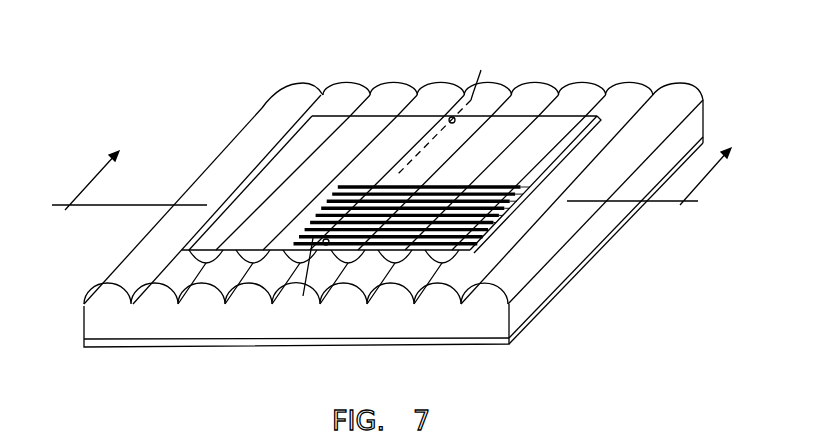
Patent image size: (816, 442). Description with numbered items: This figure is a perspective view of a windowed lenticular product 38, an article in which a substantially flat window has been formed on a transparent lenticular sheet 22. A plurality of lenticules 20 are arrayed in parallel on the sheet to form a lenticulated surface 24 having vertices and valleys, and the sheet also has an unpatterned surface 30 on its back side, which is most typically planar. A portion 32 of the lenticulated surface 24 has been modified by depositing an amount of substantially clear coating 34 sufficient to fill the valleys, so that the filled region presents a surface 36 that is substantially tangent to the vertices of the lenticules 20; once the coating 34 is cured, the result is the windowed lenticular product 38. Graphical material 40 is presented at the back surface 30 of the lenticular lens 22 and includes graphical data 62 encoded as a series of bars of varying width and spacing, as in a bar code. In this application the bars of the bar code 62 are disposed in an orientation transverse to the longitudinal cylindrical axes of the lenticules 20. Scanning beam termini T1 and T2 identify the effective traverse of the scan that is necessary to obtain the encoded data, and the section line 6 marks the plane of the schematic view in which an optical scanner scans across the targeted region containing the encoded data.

The section line 6- 6 is at (386, 191).
The lenticules 20 is at (170, 268).
The transparent lenticular sheet 22 is at (630, 275).
The lenticulated surface 24 is at (676, 94).
The unpatterned surface 30 is at (453, 338).
The portion of the lenticulated surface 32 is at (326, 111).
The substantially clear coating 34 is at (397, 255).
The surface of the filled region 36 is at (277, 168).
The windowed lenticular product 38 is at (619, 71).
The graphical material 40 is at (370, 346).
The graphical data / bar code 62 is at (357, 187).
The scanning beam terminus T1 is at (307, 279).
The scanning beam terminus T2 is at (445, 111).